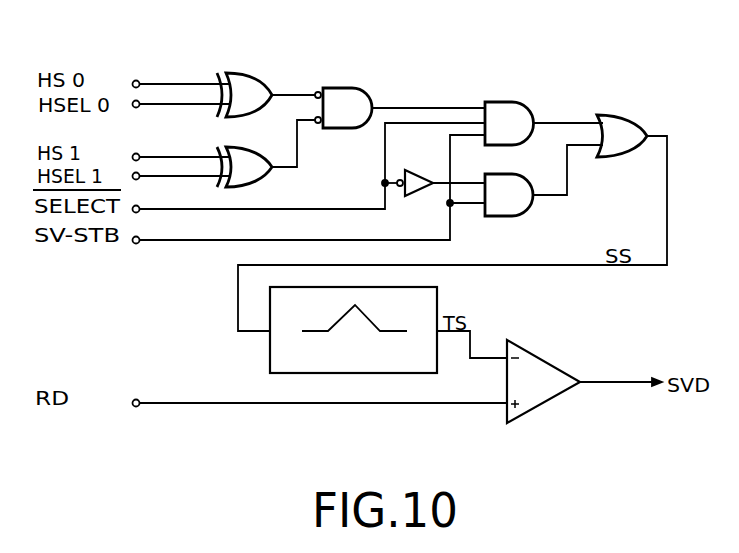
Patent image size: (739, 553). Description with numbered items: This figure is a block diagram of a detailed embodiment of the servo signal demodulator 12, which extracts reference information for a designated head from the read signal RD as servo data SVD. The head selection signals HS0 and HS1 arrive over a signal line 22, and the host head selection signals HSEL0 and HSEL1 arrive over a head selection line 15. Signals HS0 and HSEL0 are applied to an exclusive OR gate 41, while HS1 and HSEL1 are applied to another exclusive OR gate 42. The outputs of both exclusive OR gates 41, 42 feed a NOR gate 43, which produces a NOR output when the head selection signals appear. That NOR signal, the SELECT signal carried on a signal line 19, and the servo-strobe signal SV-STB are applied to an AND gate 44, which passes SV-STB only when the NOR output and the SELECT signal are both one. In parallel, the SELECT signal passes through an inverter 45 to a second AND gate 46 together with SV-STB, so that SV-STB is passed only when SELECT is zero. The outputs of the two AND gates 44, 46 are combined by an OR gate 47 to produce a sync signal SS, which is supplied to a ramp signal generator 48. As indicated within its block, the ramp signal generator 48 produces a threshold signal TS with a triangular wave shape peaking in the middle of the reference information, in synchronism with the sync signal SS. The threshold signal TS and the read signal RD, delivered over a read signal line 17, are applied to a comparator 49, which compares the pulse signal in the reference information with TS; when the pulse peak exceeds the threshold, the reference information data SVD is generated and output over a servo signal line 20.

The servo signal demodulator 12 is at (406, 54).
The head selection line 15 is at (153, 106).
The read signal line 17 is at (136, 407).
The signal line 19 is at (155, 211).
The servo signal line 20 is at (637, 385).
The signal line 22 is at (157, 82).
The exclusive OR gate 41 is at (256, 73).
The exclusive OR gate 42 is at (262, 184).
The NOR gate 43 is at (358, 87).
The AND gate 44 is at (518, 101).
The inverter 45 is at (405, 169).
The AND gate 46 is at (517, 174).
The OR gate 47 is at (620, 114).
The ramp signal generator 48 is at (438, 294).
The comparator 49 is at (554, 364).